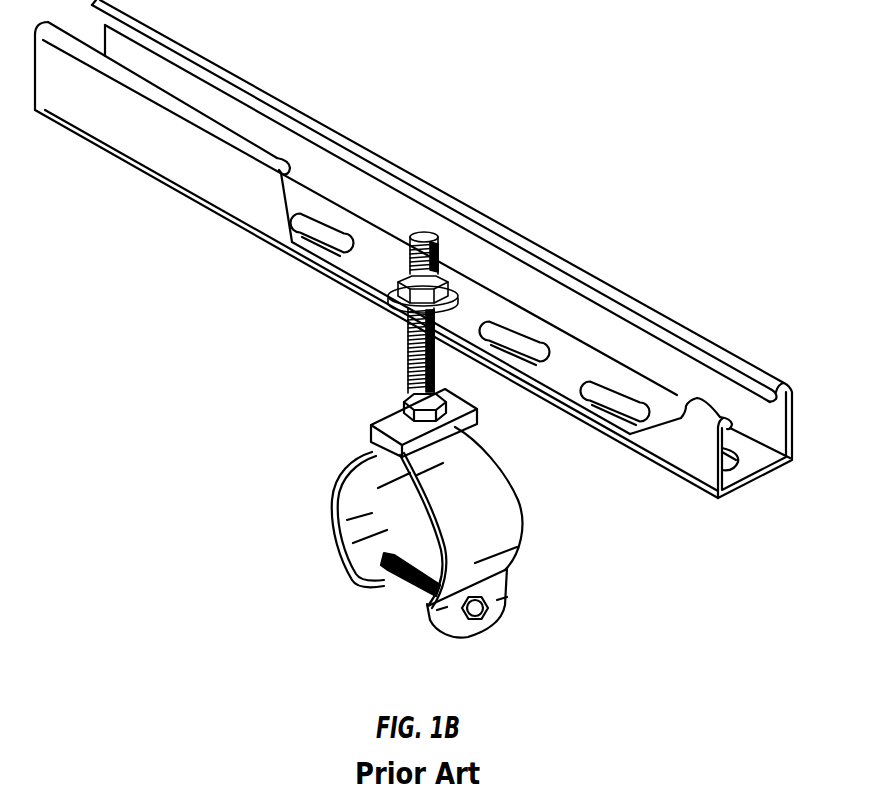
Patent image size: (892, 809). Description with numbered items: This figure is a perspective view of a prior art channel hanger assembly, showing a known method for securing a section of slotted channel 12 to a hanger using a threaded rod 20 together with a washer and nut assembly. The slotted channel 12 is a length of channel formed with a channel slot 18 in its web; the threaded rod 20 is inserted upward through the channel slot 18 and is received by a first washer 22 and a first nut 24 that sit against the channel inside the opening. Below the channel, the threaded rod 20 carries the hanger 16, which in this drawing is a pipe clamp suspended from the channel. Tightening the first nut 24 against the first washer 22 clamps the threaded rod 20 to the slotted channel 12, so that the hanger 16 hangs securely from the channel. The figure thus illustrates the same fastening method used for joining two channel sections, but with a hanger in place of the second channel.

The slotted channel 12 is at (703, 330).
The pipe clamp 16 is at (339, 546).
The channel slot 18 is at (523, 366).
The threaded rod 20 is at (428, 238).
The first washer 22 is at (388, 303).
The first nut 24 is at (438, 280).